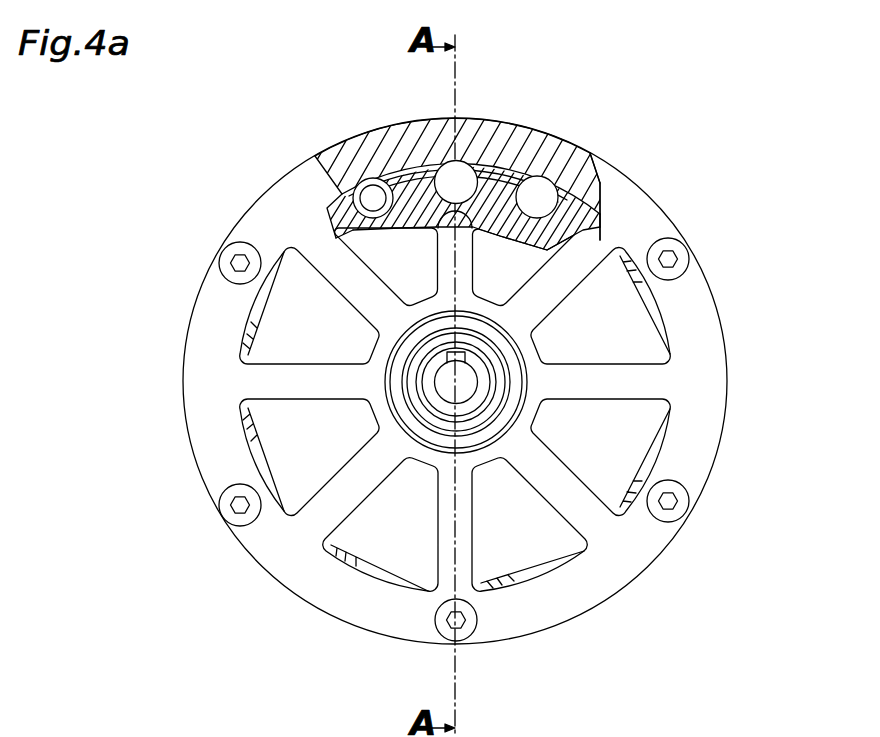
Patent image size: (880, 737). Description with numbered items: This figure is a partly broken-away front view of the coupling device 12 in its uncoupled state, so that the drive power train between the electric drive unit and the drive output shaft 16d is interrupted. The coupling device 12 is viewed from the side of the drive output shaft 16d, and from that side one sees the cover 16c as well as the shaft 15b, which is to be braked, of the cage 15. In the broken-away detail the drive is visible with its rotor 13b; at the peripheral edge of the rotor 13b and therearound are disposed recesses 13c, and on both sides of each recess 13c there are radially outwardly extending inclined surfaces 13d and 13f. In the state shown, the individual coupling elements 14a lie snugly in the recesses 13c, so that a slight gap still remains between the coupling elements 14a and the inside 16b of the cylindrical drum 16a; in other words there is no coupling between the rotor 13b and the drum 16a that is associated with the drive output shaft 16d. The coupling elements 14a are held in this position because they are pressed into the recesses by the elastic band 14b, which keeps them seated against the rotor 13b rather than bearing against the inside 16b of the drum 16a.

The coupling device 12 is at (178, 287).
The rotor 13b is at (463, 215).
The recesses 13c is at (482, 232).
The inclined surface 13d is at (410, 177).
The inclined surface 13f is at (497, 186).
The coupling elements 14a is at (373, 198).
The elastic band 14b is at (352, 190).
The cage 15 is at (635, 302).
The shaft 15b is at (447, 390).
The cylindrical drum 16a is at (593, 165).
The inside of the cylindrical drum 16b is at (600, 240).
The cover 16c is at (563, 595).
The drive output shaft 16d is at (383, 377).